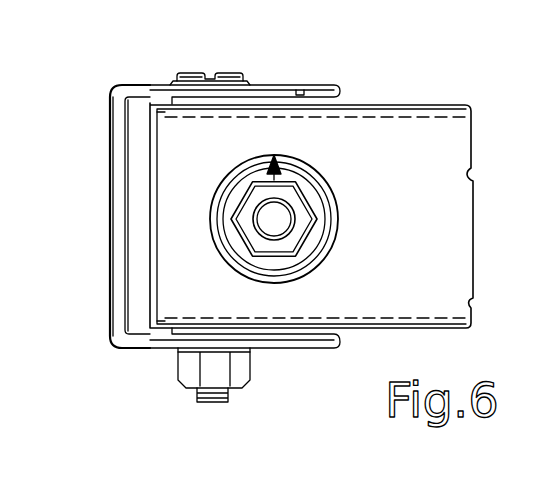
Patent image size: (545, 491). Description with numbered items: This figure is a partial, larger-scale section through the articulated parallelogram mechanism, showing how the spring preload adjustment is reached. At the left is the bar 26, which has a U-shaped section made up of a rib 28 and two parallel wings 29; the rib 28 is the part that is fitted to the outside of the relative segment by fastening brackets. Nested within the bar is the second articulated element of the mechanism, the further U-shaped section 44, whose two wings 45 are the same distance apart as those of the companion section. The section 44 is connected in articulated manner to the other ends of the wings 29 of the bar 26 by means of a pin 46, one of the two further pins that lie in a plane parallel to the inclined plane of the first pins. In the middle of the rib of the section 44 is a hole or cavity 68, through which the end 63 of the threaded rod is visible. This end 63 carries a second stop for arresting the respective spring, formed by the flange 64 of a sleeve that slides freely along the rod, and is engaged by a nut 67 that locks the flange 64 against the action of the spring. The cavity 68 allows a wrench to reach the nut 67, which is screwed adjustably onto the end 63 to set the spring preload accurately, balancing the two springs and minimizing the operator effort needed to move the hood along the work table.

The bar 26 is at (106, 203).
The rib 28 is at (118, 132).
The wings 29 is at (306, 87).
The U-shaped section 44 is at (384, 101).
The wings 45 is at (426, 112).
The pin 46 is at (197, 395).
The end of rod 63 is at (285, 227).
The flange 64 is at (243, 190).
The nut 67 is at (297, 245).
The cavity 68 is at (276, 166).